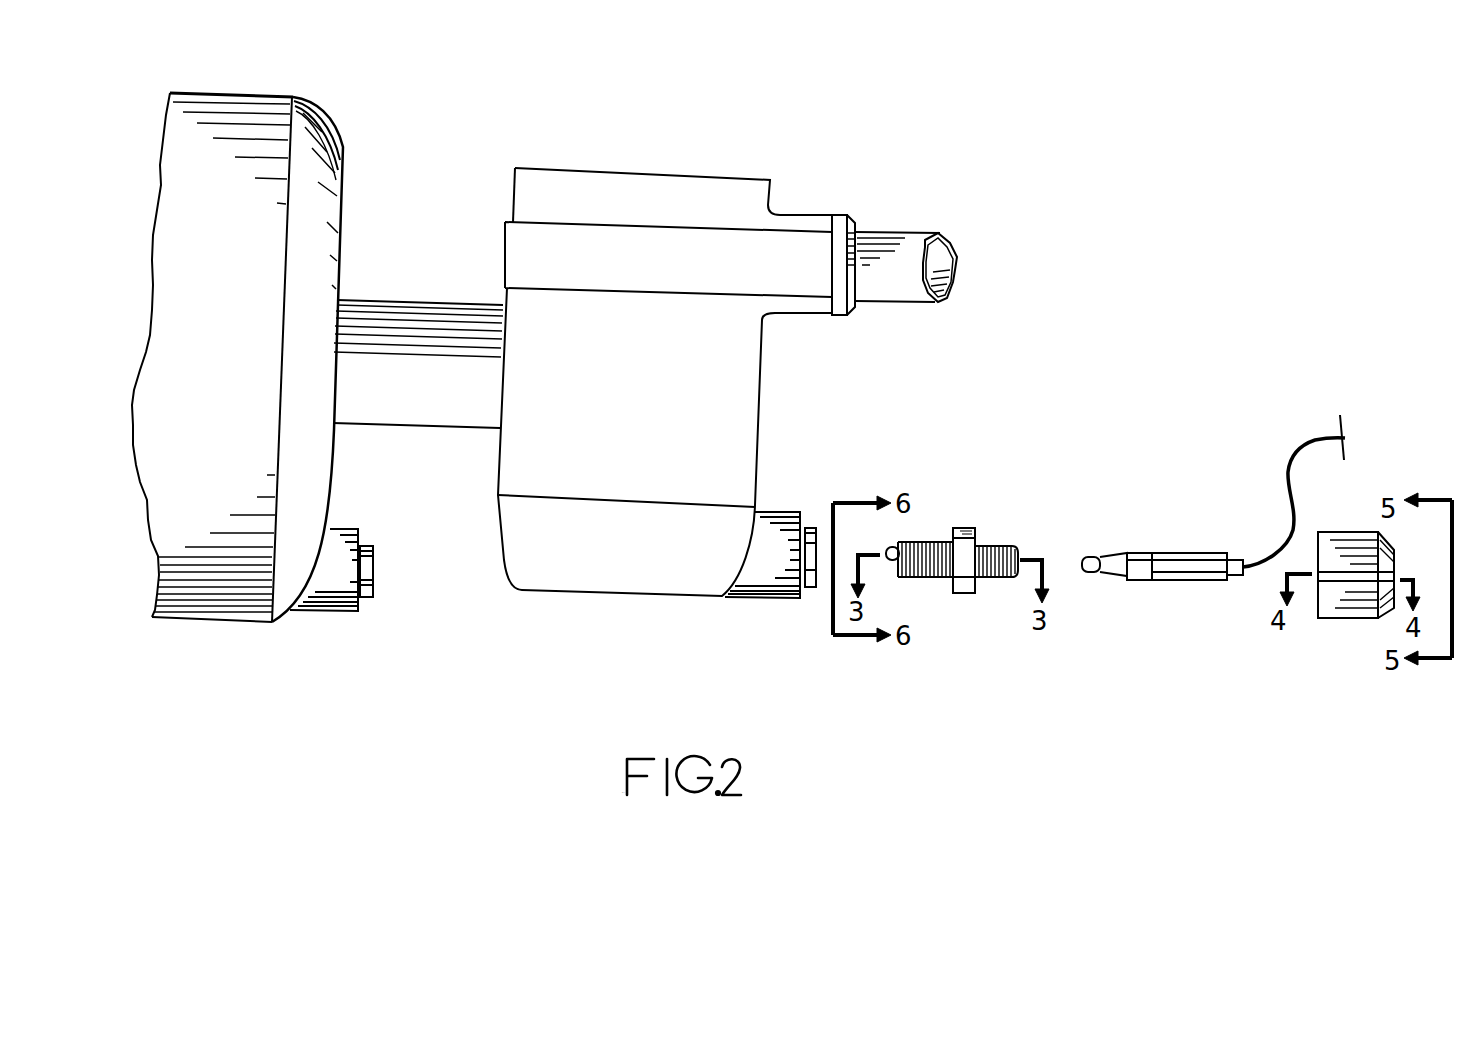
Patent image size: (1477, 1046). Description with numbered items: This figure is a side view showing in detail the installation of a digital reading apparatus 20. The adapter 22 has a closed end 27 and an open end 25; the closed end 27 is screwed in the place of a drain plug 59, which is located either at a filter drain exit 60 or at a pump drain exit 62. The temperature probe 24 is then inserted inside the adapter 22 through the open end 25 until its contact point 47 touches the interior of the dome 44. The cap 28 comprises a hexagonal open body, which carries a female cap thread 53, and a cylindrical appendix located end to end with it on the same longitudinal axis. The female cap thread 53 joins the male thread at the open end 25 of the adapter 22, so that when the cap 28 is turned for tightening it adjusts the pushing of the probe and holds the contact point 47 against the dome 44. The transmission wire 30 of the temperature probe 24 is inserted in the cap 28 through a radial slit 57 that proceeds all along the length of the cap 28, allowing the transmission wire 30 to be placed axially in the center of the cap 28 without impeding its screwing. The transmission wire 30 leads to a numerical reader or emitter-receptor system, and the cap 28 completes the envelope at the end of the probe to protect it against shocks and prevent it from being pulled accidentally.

The digital reading apparatus 20 is at (964, 596).
The adapter 22 is at (929, 582).
The temperature probe 24 is at (1187, 555).
The open end 25 is at (1010, 579).
The closed end 27 is at (900, 542).
The cap 28 is at (1362, 618).
The transmission wire 30 is at (1318, 440).
The dome 44 is at (890, 547).
The contact point 47 is at (1087, 555).
The female cap thread 53 is at (1353, 531).
The slit 57 is at (1337, 580).
The drain plug 59 is at (812, 528).
The filter drain exit 60 is at (750, 568).
The pump drain exit 62 is at (333, 577).